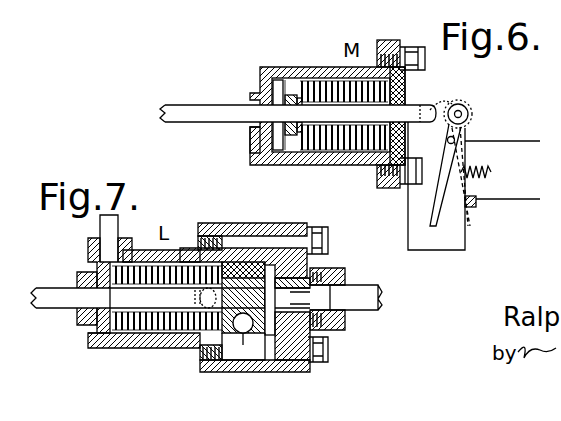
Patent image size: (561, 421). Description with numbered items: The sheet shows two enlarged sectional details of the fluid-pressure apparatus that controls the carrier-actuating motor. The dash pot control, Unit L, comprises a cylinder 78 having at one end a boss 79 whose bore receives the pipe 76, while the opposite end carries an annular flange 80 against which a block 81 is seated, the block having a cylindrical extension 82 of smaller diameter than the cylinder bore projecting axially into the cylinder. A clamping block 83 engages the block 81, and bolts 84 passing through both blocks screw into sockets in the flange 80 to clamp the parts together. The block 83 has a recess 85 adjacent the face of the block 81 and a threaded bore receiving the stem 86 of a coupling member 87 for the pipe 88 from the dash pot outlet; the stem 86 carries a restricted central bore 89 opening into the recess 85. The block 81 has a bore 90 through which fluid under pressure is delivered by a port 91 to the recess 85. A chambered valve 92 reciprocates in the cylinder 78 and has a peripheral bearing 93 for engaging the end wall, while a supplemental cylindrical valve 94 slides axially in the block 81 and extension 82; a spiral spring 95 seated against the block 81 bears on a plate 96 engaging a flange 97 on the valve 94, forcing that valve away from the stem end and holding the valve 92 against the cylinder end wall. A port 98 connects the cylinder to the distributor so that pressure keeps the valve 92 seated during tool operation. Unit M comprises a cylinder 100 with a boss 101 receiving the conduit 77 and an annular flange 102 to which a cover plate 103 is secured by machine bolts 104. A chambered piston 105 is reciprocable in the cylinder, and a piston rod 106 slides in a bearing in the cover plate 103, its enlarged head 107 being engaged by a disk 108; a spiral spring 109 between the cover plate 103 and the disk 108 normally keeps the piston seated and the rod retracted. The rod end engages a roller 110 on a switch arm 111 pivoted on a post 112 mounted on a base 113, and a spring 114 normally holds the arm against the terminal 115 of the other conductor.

In FIG. 7, the pipe 76 is at (50, 292).
In FIG. 6, the conduit 77 is at (185, 105).
In FIG. 7, the conduit 77 is at (118, 236).
In FIG. 7, the cylinder 78 is at (160, 348).
In FIG. 7, the boss 79 is at (78, 313).
In FIG. 7, the annular flange 80 is at (207, 224).
In FIG. 7, the block 81 is at (237, 224).
In FIG. 7, the cylindrical extension 82 is at (183, 348).
In FIG. 7, the clamping block 83 is at (283, 224).
In FIG. 7, the bolts 84 is at (305, 232).
In FIG. 7, the recess 85 is at (300, 262).
In FIG. 7, the stem 86 is at (330, 270).
In FIG. 7, the coupling member 87 is at (346, 318).
In FIG. 7, the pipe 88 is at (366, 290).
In FIG. 7, the restricted central bore 89 is at (300, 372).
In FIG. 7, the bore 90 is at (270, 345).
In FIG. 7, the port 91 is at (290, 360).
In FIG. 7, the chambered valve 92 is at (130, 348).
In FIG. 7, the peripheral bearing 93 is at (96, 330).
In FIG. 7, the supplemental cylindrical valve 94 is at (243, 340).
In FIG. 7, the spiral spring 95 is at (205, 362).
In FIG. 7, the plate 96 is at (100, 346).
In FIG. 7, the flange 97 is at (112, 298).
In FIG. 7, the port 98 is at (195, 298).
In FIG. 6, the cylinder 100 is at (355, 165).
In FIG. 6, the boss 101 is at (252, 133).
In FIG. 6, the annular flange 102 is at (386, 42).
In FIG. 6, the cover plate 103 is at (407, 88).
In FIG. 6, the machine bolts 104 is at (425, 60).
In FIG. 6, the chambered piston 105 is at (320, 78).
In FIG. 6, the piston rod 106 is at (437, 108).
In FIG. 6, the enlarged head 107 is at (288, 113).
In FIG. 6, the disk 108 is at (288, 80).
In FIG. 6, the spiral spring 109 is at (300, 72).
In FIG. 6, the roller 110 is at (468, 112).
In FIG. 6, the switch arm 111 is at (436, 165).
In FIG. 6, the post 112 is at (458, 137).
In FIG. 6, the base 113 is at (460, 242).
In FIG. 6, the spring 114 is at (484, 172).
In FIG. 6, the terminal 115 is at (478, 204).